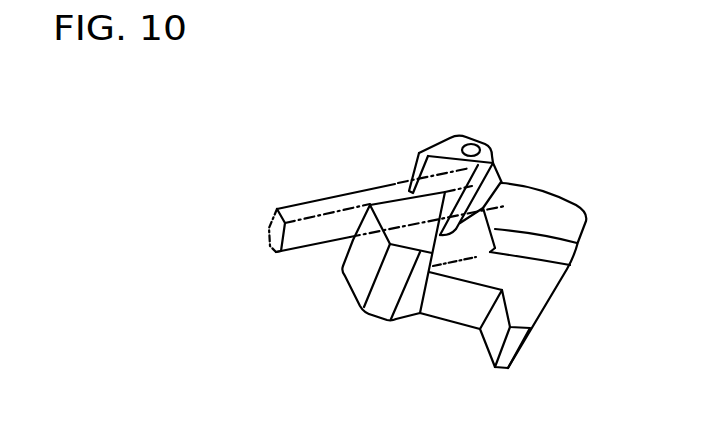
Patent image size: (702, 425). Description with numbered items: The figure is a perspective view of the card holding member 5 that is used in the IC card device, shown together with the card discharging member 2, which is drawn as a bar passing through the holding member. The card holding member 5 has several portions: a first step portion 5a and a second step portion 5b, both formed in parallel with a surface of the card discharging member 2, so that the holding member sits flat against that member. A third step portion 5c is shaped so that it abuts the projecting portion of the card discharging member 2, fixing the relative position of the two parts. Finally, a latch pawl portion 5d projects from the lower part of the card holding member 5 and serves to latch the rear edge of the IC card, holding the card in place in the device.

The card discharging member 2 is at (308, 207).
The card holding member 5 is at (490, 259).
The first step portion 5a is at (410, 183).
The second step portion 5b is at (523, 312).
The third step portion 5c is at (438, 245).
The latch pawl portion 5d is at (550, 253).